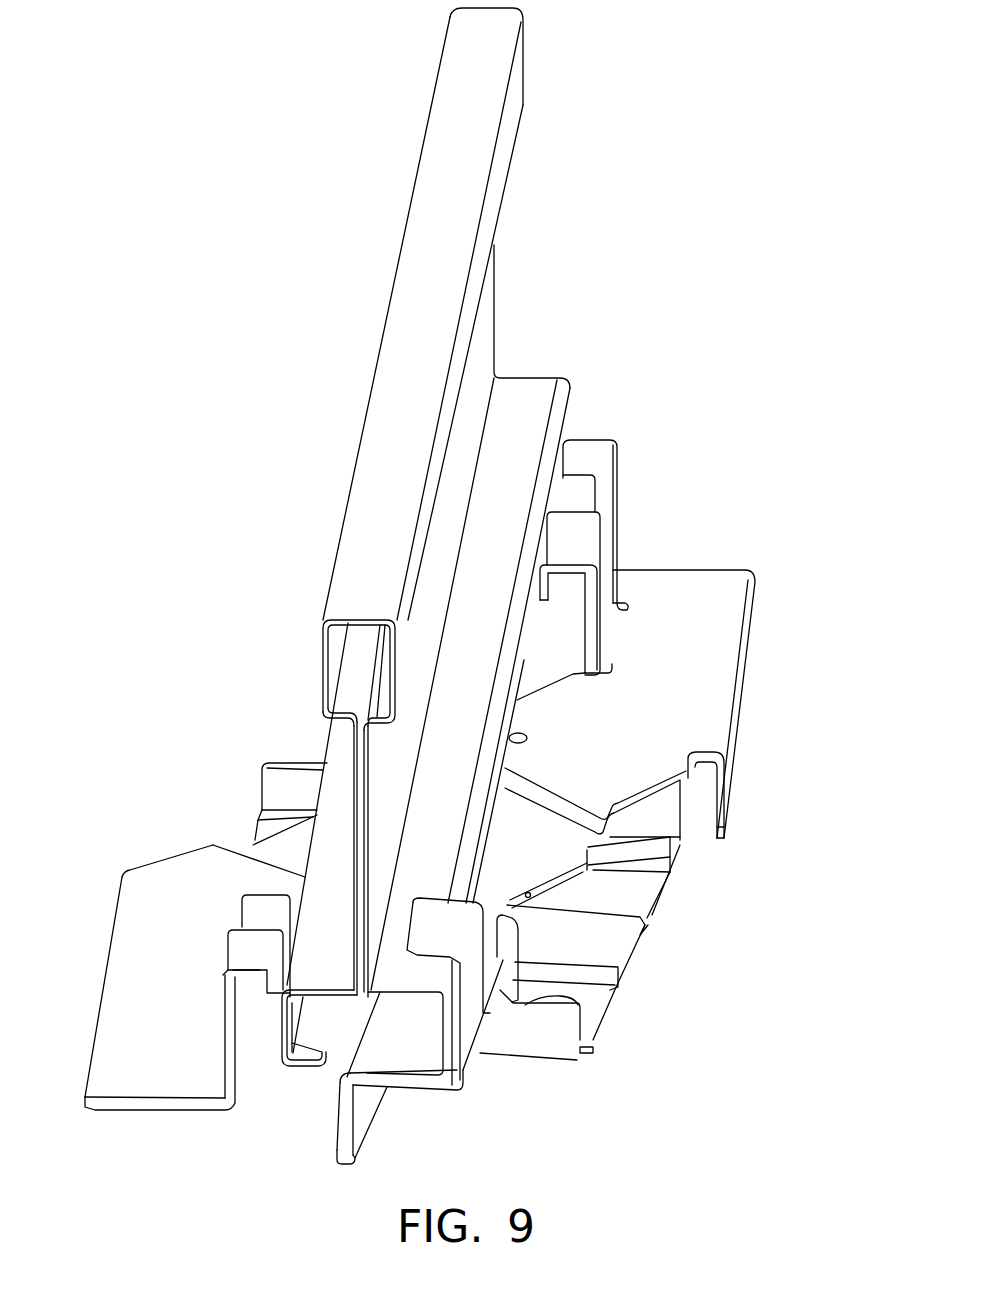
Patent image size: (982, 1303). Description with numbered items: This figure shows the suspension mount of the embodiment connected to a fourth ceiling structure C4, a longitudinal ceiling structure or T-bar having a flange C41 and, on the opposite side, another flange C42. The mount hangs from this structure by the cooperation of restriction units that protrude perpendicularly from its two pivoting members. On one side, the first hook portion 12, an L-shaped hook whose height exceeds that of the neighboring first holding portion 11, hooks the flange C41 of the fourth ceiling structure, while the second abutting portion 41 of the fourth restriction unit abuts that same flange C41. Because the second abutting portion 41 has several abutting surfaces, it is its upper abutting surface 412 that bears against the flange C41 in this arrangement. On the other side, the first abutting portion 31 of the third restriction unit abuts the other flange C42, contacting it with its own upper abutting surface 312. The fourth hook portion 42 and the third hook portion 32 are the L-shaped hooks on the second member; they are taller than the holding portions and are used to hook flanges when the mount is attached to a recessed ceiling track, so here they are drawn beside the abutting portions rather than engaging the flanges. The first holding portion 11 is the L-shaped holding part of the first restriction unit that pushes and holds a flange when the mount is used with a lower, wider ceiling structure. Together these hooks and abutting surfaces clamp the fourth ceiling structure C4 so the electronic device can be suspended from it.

The flange of the fourth ceiling structure C41 is at (527, 405).
The fourth ceiling structure C4 is at (322, 633).
The other flange of the fourth ceiling structure C42 is at (337, 823).
The fourth hook portion 42 is at (585, 455).
The second abutting portion 41 is at (573, 545).
The upper abutting surface 412 is at (540, 590).
The first holding portion 11 is at (488, 913).
The first hook portion 12 is at (443, 933).
The third hook portion 32 is at (242, 952).
The first abutting portion 31 is at (253, 910).
The upper abutting surface 312 is at (293, 912).